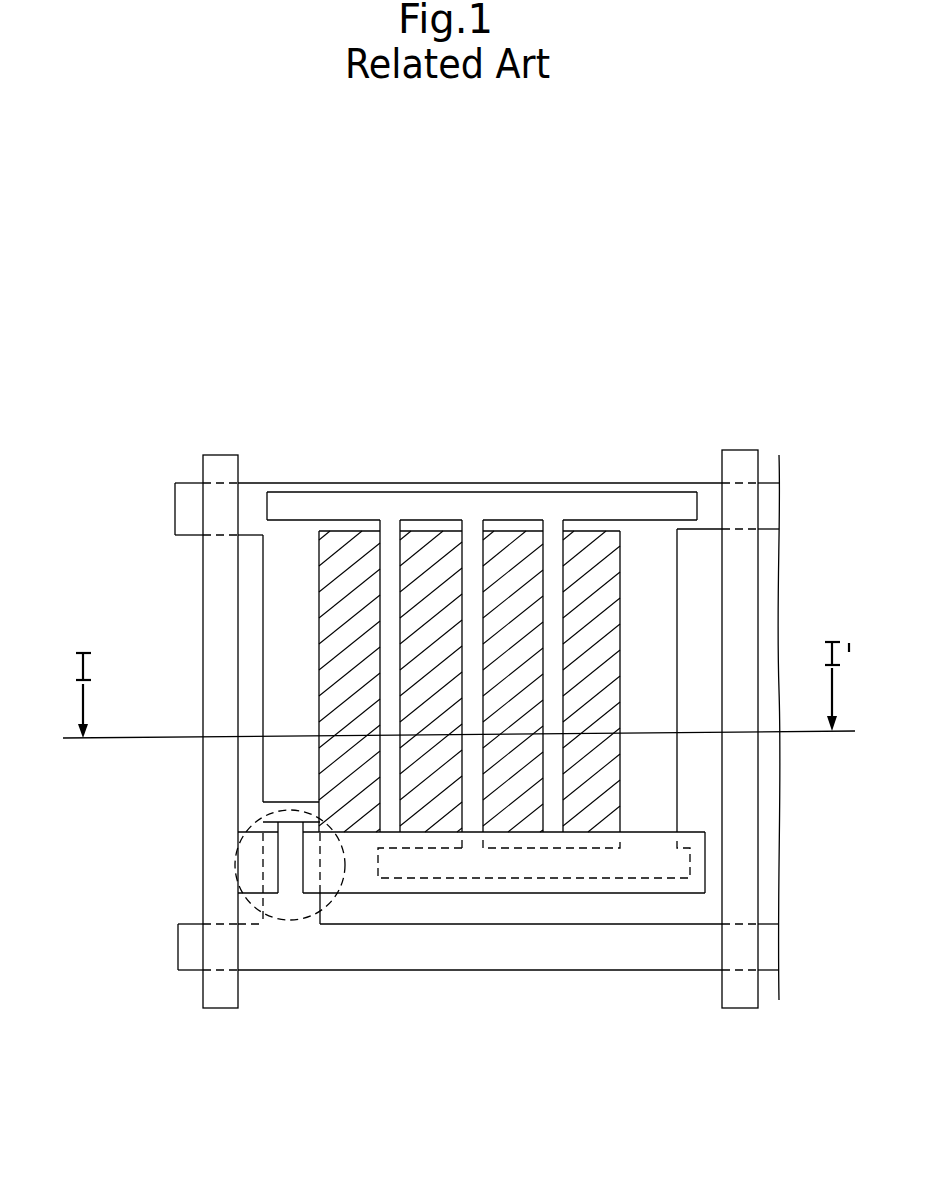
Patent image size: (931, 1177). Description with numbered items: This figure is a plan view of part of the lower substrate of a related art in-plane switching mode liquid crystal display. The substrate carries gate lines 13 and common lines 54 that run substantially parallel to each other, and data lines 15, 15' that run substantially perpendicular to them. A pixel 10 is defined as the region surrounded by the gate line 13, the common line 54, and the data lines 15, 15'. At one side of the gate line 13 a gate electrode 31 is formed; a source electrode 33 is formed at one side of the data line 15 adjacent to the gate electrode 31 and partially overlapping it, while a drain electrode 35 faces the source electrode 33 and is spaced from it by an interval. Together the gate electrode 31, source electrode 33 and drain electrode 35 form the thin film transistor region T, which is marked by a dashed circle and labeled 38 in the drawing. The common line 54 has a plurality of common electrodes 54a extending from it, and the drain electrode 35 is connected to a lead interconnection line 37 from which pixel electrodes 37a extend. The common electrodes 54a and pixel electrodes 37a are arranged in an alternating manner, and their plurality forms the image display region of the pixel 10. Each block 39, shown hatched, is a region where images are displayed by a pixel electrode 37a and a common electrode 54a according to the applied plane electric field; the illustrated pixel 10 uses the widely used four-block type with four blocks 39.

The pixel 10 is at (158, 470).
The gate line 13 is at (578, 950).
The data line 15 is at (170, 731).
The data line 15' is at (752, 777).
The gate electrode 31 is at (268, 815).
The source electrode 33 is at (253, 873).
The drain electrode 35 is at (308, 892).
The lead interconnection line 37 is at (430, 883).
The pixel electrode 37a is at (385, 637).
The semiconductor layer 38 is at (292, 882).
The block 39 is at (345, 537).
The common line 54 is at (185, 506).
The common electrode 54a is at (283, 580).
The thin film transistor region T is at (240, 888).